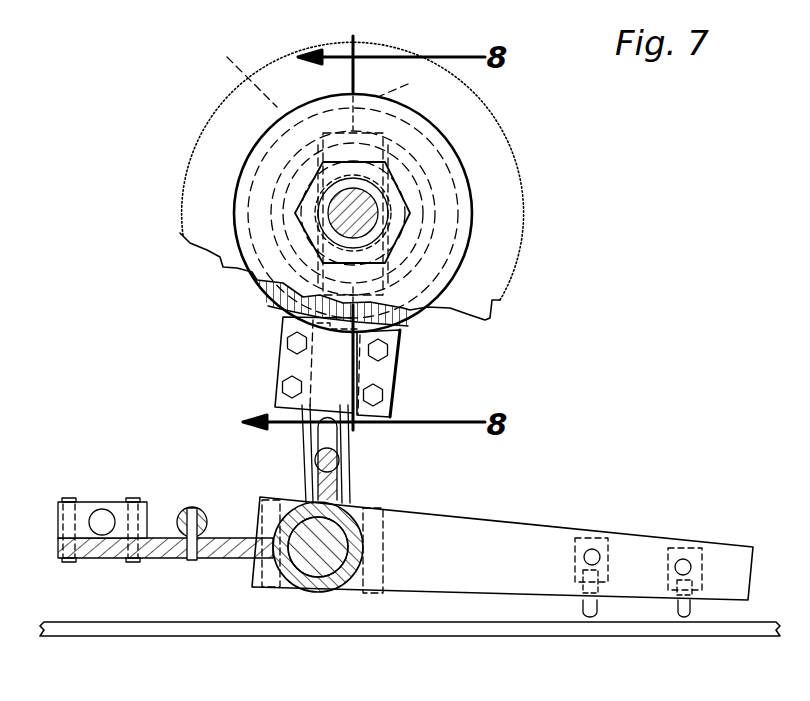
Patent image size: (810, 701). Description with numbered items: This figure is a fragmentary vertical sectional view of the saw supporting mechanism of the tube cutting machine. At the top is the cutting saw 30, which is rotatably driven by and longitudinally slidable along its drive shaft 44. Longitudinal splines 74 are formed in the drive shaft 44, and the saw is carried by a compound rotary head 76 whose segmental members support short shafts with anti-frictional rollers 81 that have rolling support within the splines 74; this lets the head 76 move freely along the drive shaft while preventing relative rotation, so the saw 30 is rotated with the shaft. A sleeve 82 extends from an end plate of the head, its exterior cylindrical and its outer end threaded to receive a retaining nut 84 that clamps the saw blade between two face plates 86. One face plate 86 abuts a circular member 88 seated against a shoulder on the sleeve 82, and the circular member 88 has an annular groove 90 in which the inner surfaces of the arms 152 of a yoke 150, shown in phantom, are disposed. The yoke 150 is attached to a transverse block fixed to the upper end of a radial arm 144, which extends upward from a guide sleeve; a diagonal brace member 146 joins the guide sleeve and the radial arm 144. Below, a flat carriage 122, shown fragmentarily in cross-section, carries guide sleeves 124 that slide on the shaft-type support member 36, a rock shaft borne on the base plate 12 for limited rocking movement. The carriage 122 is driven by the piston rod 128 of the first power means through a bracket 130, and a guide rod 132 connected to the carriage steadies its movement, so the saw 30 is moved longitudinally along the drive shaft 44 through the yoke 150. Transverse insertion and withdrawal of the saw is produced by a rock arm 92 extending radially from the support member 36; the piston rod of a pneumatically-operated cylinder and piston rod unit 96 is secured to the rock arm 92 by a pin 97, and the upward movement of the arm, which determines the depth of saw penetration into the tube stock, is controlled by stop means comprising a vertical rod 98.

The base plate 12 is at (197, 632).
The cutting saw 30 is at (518, 173).
The support member 36 is at (305, 592).
The drive shaft 44 is at (253, 277).
The longitudinal splines 74 is at (377, 187).
The rotary head 76 is at (413, 143).
The anti-frictional rollers 81 is at (258, 145).
The sleeve 82 is at (372, 222).
The retaining nut 84 is at (295, 204).
The face plates 86 is at (270, 303).
The circular member 88 is at (408, 83).
The annular groove 90 is at (237, 74).
The rock arm 92 is at (470, 507).
The cylinder and piston rod unit 96 is at (577, 603).
The pin 97 is at (591, 550).
The vertical rod 98 is at (672, 603).
The carriage 122 is at (163, 560).
The guide sleeves 124 is at (288, 500).
The piston rod 128 is at (95, 512).
The bracket 130 is at (115, 508).
The guide rod 132 is at (177, 507).
The radial arm 144 is at (350, 480).
The diagonal brace member 146 is at (312, 455).
The yoke 150 is at (395, 378).
The yoke arms 152 is at (250, 183).